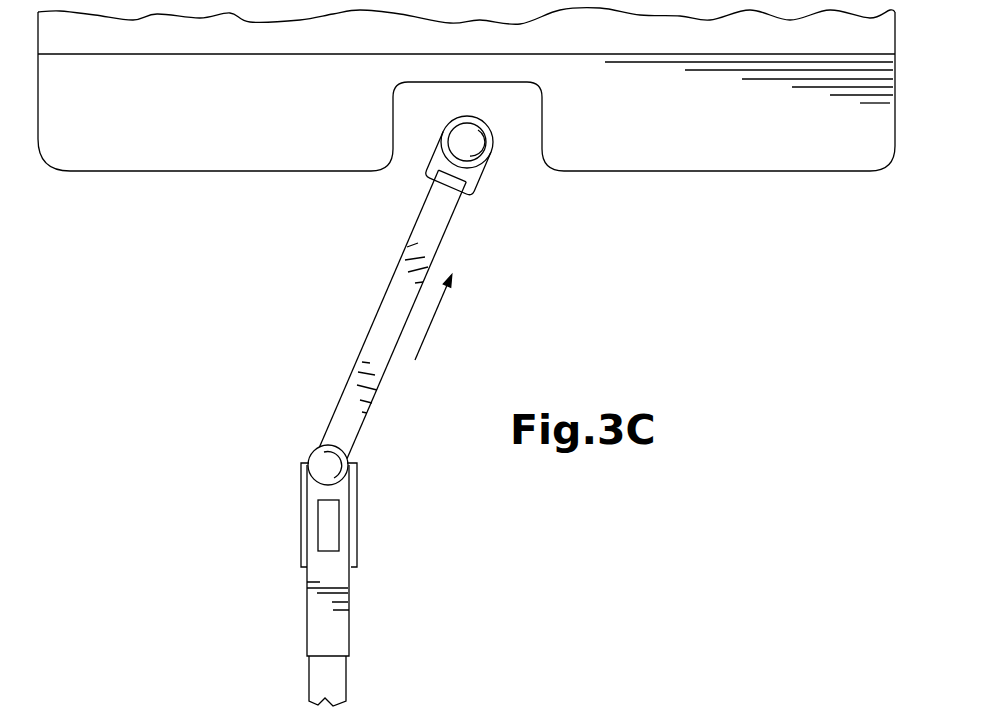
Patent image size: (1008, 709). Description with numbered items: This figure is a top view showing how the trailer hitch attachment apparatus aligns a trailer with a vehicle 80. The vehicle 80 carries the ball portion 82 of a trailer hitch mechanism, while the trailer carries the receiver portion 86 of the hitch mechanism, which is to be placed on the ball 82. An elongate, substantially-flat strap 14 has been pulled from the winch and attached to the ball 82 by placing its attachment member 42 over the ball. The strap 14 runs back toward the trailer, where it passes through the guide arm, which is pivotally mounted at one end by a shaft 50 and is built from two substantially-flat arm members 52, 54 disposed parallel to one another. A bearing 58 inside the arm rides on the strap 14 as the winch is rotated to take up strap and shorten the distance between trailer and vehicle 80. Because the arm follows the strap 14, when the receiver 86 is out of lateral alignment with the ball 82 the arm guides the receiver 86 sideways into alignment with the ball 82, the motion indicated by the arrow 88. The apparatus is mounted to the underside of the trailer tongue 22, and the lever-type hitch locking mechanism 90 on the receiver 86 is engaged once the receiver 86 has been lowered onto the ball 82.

The vehicle 80 is at (145, 172).
The attachment member 42 is at (437, 158).
The ball portion 82 is at (473, 143).
The strap 14 is at (388, 300).
The arrow 88 is at (438, 307).
The bearing 58 is at (357, 469).
The arm member 52 is at (301, 494).
The arm member 54 is at (357, 505).
The shaft 50 is at (357, 562).
The hitch locking mechanism 90 is at (327, 525).
The receiver portion 86 is at (330, 610).
The tongue 22 is at (330, 680).